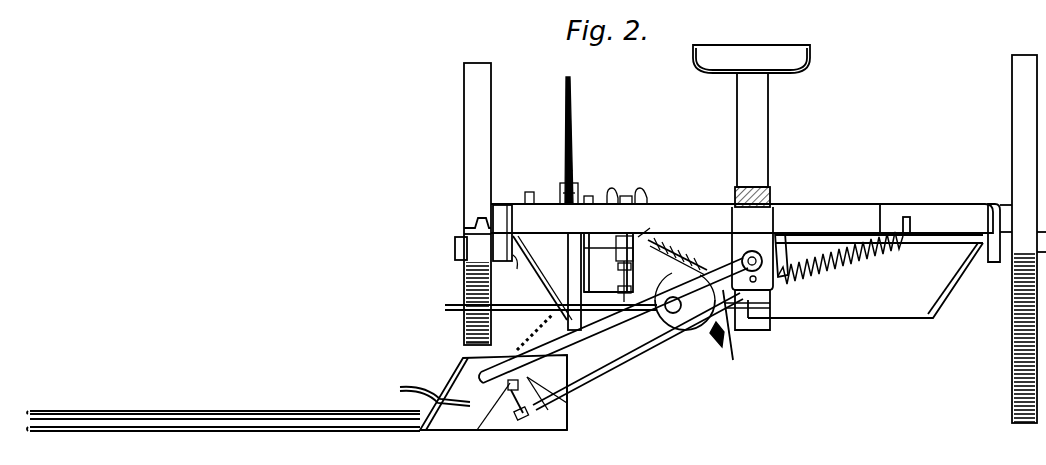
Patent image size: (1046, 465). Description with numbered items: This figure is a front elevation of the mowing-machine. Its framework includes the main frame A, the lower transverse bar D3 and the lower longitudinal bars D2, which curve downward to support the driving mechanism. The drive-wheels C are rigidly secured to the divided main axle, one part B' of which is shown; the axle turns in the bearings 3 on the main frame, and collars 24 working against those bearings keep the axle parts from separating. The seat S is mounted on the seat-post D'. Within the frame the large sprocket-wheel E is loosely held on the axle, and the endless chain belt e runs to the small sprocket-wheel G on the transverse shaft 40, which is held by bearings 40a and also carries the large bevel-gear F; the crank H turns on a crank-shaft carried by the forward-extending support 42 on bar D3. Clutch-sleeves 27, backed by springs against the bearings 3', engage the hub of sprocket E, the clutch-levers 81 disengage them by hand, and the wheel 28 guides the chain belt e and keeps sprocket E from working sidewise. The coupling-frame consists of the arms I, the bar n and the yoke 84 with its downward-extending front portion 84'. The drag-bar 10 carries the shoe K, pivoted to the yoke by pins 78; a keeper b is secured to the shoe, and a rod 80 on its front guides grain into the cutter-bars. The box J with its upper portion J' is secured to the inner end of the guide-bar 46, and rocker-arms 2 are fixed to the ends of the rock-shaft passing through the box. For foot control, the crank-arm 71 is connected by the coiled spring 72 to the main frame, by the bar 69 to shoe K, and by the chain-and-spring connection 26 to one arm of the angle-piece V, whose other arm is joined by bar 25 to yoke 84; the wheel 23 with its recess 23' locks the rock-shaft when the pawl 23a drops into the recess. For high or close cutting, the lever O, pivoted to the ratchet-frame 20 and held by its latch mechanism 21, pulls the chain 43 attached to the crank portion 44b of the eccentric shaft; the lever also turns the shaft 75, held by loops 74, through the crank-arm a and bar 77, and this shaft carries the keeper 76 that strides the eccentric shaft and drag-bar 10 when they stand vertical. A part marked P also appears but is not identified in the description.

The drive-wheel C is at (479, 143).
The keeper 76 is at (458, 208).
The shaft 75 is at (502, 207).
The main frame A is at (907, 217).
The collar 24 is at (983, 272).
The bearing 3 is at (742, 286).
The seat S is at (790, 65).
The seat-post D' is at (767, 130).
The lower longitudinal bar D2 is at (568, 266).
The latch mechanism 21 is at (576, 185).
The crank-arm a is at (560, 193).
The bar 77 is at (561, 170).
The loop 74 is at (529, 192).
The ratchet-frame 20 is at (609, 194).
The clutch-lever 81 is at (633, 190).
The large sprocket-wheel E is at (630, 224).
The angle-piece V is at (614, 269).
The endless chain belt e is at (622, 291).
The lever O is at (566, 140).
The wheel 28 is at (653, 230).
The connection 26 is at (708, 243).
The bearing 3' is at (697, 215).
The clutch-sleeve 27 is at (670, 270).
The rod P is at (543, 301).
The chain 43 is at (534, 333).
The transverse shaft 40 is at (616, 349).
The bar 25 is at (589, 356).
The shoe K is at (493, 392).
The keeper b is at (567, 418).
The upper portion of box J' is at (447, 389).
The rod 80 is at (418, 387).
The rocker-arm 2 is at (466, 320).
The crank portion 44b is at (464, 338).
The guide-bar 46 is at (345, 420).
The drag-bar 10 is at (375, 430).
The pin 78 is at (495, 405).
The yoke 84 is at (508, 423).
The front portion of yoke 84' is at (536, 429).
The box J is at (608, 406).
The arm I is at (580, 333).
The bar n is at (639, 355).
The small sprocket-wheel G is at (657, 302).
The crank H is at (685, 314).
The large bevel-gear F is at (711, 328).
The bar 69 is at (678, 338).
The crank-arm 71 is at (720, 345).
The forward-extending support 42 is at (730, 340).
The bearing 40a is at (742, 340).
The lower transverse bar D3 is at (865, 293).
The main axle part B' is at (879, 255).
The closed coiled spring 72 is at (858, 256).
The pawl 23a is at (783, 244).
The recess 23' is at (803, 299).
The wheel 23 is at (793, 322).